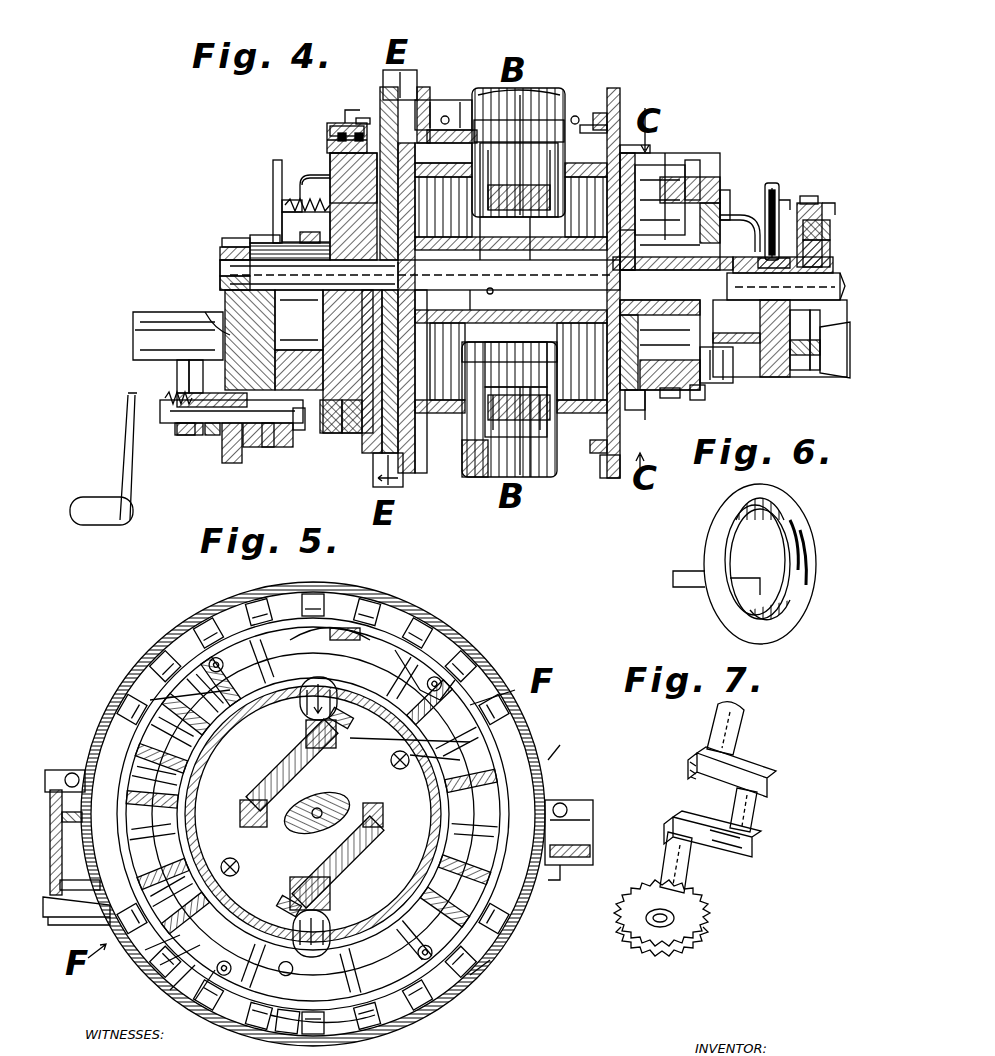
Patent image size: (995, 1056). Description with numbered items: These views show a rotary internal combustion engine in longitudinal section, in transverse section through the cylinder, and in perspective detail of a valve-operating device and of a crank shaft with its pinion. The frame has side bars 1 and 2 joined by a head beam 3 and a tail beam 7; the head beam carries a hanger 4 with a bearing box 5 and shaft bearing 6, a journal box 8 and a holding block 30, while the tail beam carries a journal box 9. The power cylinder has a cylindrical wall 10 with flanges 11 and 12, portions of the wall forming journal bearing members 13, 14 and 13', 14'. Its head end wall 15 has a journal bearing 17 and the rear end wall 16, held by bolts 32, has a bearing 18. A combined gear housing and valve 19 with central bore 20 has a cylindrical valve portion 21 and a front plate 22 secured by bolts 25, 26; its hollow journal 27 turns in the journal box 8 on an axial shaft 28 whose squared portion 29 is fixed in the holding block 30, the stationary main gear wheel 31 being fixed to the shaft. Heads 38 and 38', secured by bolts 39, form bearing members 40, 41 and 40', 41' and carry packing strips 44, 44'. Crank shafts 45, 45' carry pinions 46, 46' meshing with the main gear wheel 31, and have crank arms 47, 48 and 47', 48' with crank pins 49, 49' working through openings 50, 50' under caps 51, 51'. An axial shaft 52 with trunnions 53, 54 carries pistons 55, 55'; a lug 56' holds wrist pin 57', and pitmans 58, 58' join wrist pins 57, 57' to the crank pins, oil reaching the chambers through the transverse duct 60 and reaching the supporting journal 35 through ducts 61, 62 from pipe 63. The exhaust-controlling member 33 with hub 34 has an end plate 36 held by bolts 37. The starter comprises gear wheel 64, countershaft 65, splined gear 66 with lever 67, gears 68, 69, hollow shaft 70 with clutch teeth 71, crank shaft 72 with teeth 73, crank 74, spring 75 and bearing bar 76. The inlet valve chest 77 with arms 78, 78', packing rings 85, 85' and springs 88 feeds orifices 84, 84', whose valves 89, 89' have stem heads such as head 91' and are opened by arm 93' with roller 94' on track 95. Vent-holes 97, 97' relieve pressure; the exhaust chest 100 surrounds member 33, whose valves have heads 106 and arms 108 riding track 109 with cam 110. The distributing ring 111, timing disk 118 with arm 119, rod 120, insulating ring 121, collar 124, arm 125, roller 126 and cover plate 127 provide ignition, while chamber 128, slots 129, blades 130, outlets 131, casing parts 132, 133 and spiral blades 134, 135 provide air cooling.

In FIG. 4, the side bar 1 is at (835, 373).
In FIG. 5, the side bar 1 is at (558, 875).
In FIG. 5, the side bar 2 is at (48, 920).
In FIG. 5, the head beam 3 is at (70, 776).
In FIG. 4, the hanger 4 is at (190, 380).
In FIG. 4, the bearing box 5 is at (268, 447).
In FIG. 4, the shaft bearing 6 is at (177, 372).
In FIG. 4, the tail beam 7 is at (783, 378).
In FIG. 4, the journal box 8 is at (262, 246).
In FIG. 4, the journal box 9 is at (722, 385).
In FIG. 4, the cylindrical wall 10 is at (418, 470).
In FIG. 5, the cylindrical wall 10 is at (135, 735).
In FIG. 4, the external flange 11 is at (444, 128).
In FIG. 5, the external flange 11 is at (198, 620).
In FIG. 4, the external flange 12 is at (600, 113).
In FIG. 4, the journal bearing member 13 is at (452, 113).
In FIG. 5, the journal bearing member 13 is at (313, 798).
In FIG. 4, the journal bearing member 13' is at (477, 471).
In FIG. 5, the journal bearing member 13' is at (254, 1032).
In FIG. 4, the journal bearing member 14 is at (587, 114).
In FIG. 4, the journal bearing member 14' is at (579, 480).
In FIG. 4, the head end wall 15 is at (423, 90).
In FIG. 5, the head end wall 15 is at (150, 700).
In FIG. 4, the rear end wall 16 is at (613, 88).
In FIG. 4, the journal bearing 17 is at (372, 272).
In FIG. 4, the journal bearing 18 is at (680, 175).
In FIG. 4, the combined gear housing and valve 19 is at (331, 180).
In FIG. 4, the central bore 20 is at (443, 207).
In FIG. 4, the valve portion 21 is at (335, 165).
In FIG. 4, the front plate 22 is at (330, 128).
In FIG. 4, the securing bolt 25 is at (352, 425).
In FIG. 5, the securing bolt 26 is at (430, 692).
In FIG. 4, the hollow journal 27 is at (220, 252).
In FIG. 4, the axial shaft 28 is at (262, 238).
In FIG. 4, the squared portion 29 is at (220, 268).
In FIG. 4, the holding block 30 is at (236, 246).
In FIG. 4, the main gear wheel 31 is at (420, 273).
In FIG. 4, the bolt 32 is at (612, 478).
In FIG. 4, the cylindrical exhaust-controlling member 33 is at (645, 405).
In FIG. 4, the central hub 34 is at (660, 345).
In FIG. 4, the supporting journal 35 is at (838, 300).
In FIG. 4, the end plate 36 is at (716, 200).
In FIG. 5, the end plate 36 is at (245, 812).
In FIG. 4, the bolt 37 is at (726, 198).
In FIG. 4, the head 38 is at (670, 191).
In FIG. 5, the head 38 is at (462, 737).
In FIG. 4, the head 38' is at (353, 390).
In FIG. 5, the head 38' is at (163, 992).
In FIG. 5, the bolt 39 is at (238, 866).
In FIG. 5, the shaft bearing member 40 is at (407, 631).
In FIG. 4, the shaft bearing member 40' is at (447, 361).
In FIG. 5, the shaft bearing member 40' is at (187, 998).
In FIG. 4, the shaft bearing member 41 is at (638, 122).
In FIG. 4, the shaft bearing member 41' is at (582, 361).
In FIG. 5, the packing strip 44 is at (324, 725).
In FIG. 5, the packing strip 44' is at (350, 909).
In FIG. 4, the crank shaft 45 is at (514, 94).
In FIG. 7, the crank shaft 45 is at (697, 862).
In FIG. 4, the crank shaft 45' is at (507, 346).
In FIG. 4, the pinion 46 is at (355, 103).
In FIG. 7, the pinion 46 is at (683, 918).
In FIG. 4, the pinion 46' is at (366, 399).
In FIG. 4, the crank arm 47 is at (512, 135).
In FIG. 5, the crank arm 47 is at (325, 776).
In FIG. 7, the crank arm 47 is at (727, 834).
In FIG. 4, the crank arm 47' is at (513, 414).
In FIG. 5, the crank arm 47' is at (372, 1003).
In FIG. 4, the crank arm 48 is at (523, 140).
In FIG. 7, the crank arm 48 is at (737, 749).
In FIG. 4, the crank arm 48' is at (517, 417).
In FIG. 4, the crank pin 49 is at (483, 244).
In FIG. 5, the crank pin 49 is at (308, 788).
In FIG. 7, the crank pin 49 is at (765, 810).
In FIG. 4, the crank pin 49' is at (530, 431).
In FIG. 5, the crank pin 49' is at (356, 855).
In FIG. 4, the opening 50 is at (465, 289).
In FIG. 5, the opening 50 is at (384, 658).
In FIG. 4, the opening 50' is at (516, 364).
In FIG. 5, the opening 50' is at (324, 907).
In FIG. 4, the cap 51 is at (538, 132).
In FIG. 5, the cap 51 is at (339, 601).
In FIG. 4, the cap 51' is at (521, 459).
In FIG. 5, the cap 51' is at (341, 1035).
In FIG. 4, the axial shaft or hub 52 is at (532, 95).
In FIG. 4, the trunnion 53 is at (452, 250).
In FIG. 4, the trunnion 54 is at (630, 250).
In FIG. 4, the piston 55 is at (490, 282).
In FIG. 5, the piston 55 is at (156, 775).
In FIG. 5, the piston 55' is at (519, 775).
In FIG. 5, the lug 56' is at (474, 834).
In FIG. 5, the wrist pin 57 is at (345, 740).
In FIG. 5, the wrist pin 57' is at (457, 877).
In FIG. 4, the pitman 58 is at (518, 126).
In FIG. 5, the pitman 58 is at (292, 765).
In FIG. 4, the pitman 58' is at (511, 401).
In FIG. 5, the pitman 58' is at (356, 862).
In FIG. 4, the transverse duct 60 is at (525, 245).
In FIG. 5, the transverse duct 60 is at (398, 769).
In FIG. 4, the longitudinal duct 61 is at (670, 351).
In FIG. 4, the lateral duct 62 is at (768, 378).
In FIG. 4, the pipe 63 is at (775, 185).
In FIG. 4, the gear wheel 64 is at (282, 208).
In FIG. 4, the countershaft 65 is at (222, 288).
In FIG. 4, the gear wheel 66 is at (324, 360).
In FIG. 4, the controlling lever 67 is at (298, 431).
In FIG. 4, the gear wheel 68 is at (230, 335).
In FIG. 4, the gear wheel 69 is at (232, 464).
In FIG. 4, the hollow shaft 70 is at (252, 447).
In FIG. 4, the clutch teeth 71 is at (213, 435).
In FIG. 4, the crank shaft 72 is at (182, 425).
In FIG. 4, the clutch teeth 73 is at (195, 425).
In FIG. 4, the crank 74 is at (128, 466).
In FIG. 4, the spring 75 is at (175, 425).
In FIG. 4, the bearing bar 76 is at (180, 436).
In FIG. 5, the bearing bar 76 is at (90, 920).
In FIG. 4, the annular valve chest 77 is at (346, 133).
In FIG. 5, the supporting arm 78 is at (577, 832).
In FIG. 5, the supporting arm 78' is at (70, 843).
In FIG. 5, the orifice 84 is at (140, 956).
In FIG. 5, the orifice 84' is at (490, 757).
In FIG. 4, the packing ring 85 is at (315, 124).
In FIG. 4, the packing ring 85' is at (336, 100).
In FIG. 4, the spring 88 is at (330, 425).
In FIG. 5, the controlling valve 89 is at (158, 971).
In FIG. 5, the controlling valve 89' is at (584, 746).
In FIG. 4, the head 91' is at (308, 229).
In FIG. 4, the arm 93' is at (308, 176).
In FIG. 4, the roller 94' is at (282, 191).
In FIG. 4, the circular track 95 is at (273, 165).
In FIG. 4, the vent-hole 97 is at (586, 225).
In FIG. 4, the vent-hole 97' is at (649, 424).
In FIG. 4, the annular valve chest 100 is at (700, 397).
In FIG. 4, the head 106 is at (736, 214).
In FIG. 4, the operating arm 108 is at (770, 183).
In FIG. 4, the circular track 109 is at (782, 200).
In FIG. 6, the circular track 109 is at (705, 560).
In FIG. 6, the cam portion 110 is at (812, 520).
In FIG. 4, the electrical distributing ring 111 is at (692, 160).
In FIG. 4, the disk 118 is at (804, 378).
In FIG. 4, the arm 119 is at (806, 206).
In FIG. 4, the controlling rod 120 is at (818, 200).
In FIG. 4, the insulating ring 121 is at (805, 356).
In FIG. 4, the collar 124 is at (828, 378).
In FIG. 4, the arm 125 is at (830, 254).
In FIG. 4, the roller 126 is at (830, 232).
In FIG. 4, the cover plate 127 is at (828, 203).
In FIG. 4, the chamber 128 is at (672, 398).
In FIG. 4, the slot 129 is at (667, 165).
In FIG. 4, the blade 130 is at (640, 170).
In FIG. 4, the outlet opening 131 is at (720, 377).
In FIG. 5, the end part 132 is at (470, 975).
In FIG. 5, the top part 133 is at (190, 650).
In FIG. 4, the spirally arranged blade 134 is at (422, 475).
In FIG. 5, the spirally arranged blade 134 is at (345, 628).
In FIG. 4, the spirally arranged blade 135 is at (456, 128).
In FIG. 5, the spirally arranged blade 135 is at (130, 745).